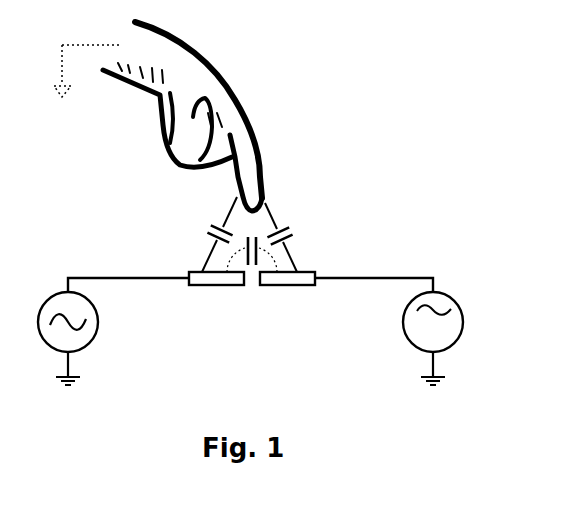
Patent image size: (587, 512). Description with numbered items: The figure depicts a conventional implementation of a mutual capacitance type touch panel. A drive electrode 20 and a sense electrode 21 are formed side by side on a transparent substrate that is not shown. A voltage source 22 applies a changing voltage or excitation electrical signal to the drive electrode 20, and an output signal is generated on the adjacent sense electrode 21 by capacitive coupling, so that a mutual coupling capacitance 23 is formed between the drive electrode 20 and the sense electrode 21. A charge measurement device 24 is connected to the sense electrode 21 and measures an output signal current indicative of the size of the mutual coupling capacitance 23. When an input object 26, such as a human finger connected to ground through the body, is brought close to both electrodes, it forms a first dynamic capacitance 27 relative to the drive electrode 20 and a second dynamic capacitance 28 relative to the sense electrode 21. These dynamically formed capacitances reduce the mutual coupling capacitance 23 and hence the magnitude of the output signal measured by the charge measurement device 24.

The drive electrode 20 is at (195, 288).
The sense electrode 21 is at (300, 288).
The voltage source 22 is at (93, 342).
The mutual coupling capacitance 23 is at (252, 268).
The charge measurement device 24 is at (462, 343).
The input object 26 is at (260, 115).
The first dynamic capacitance 27 is at (200, 224).
The second dynamic capacitance 28 is at (295, 225).